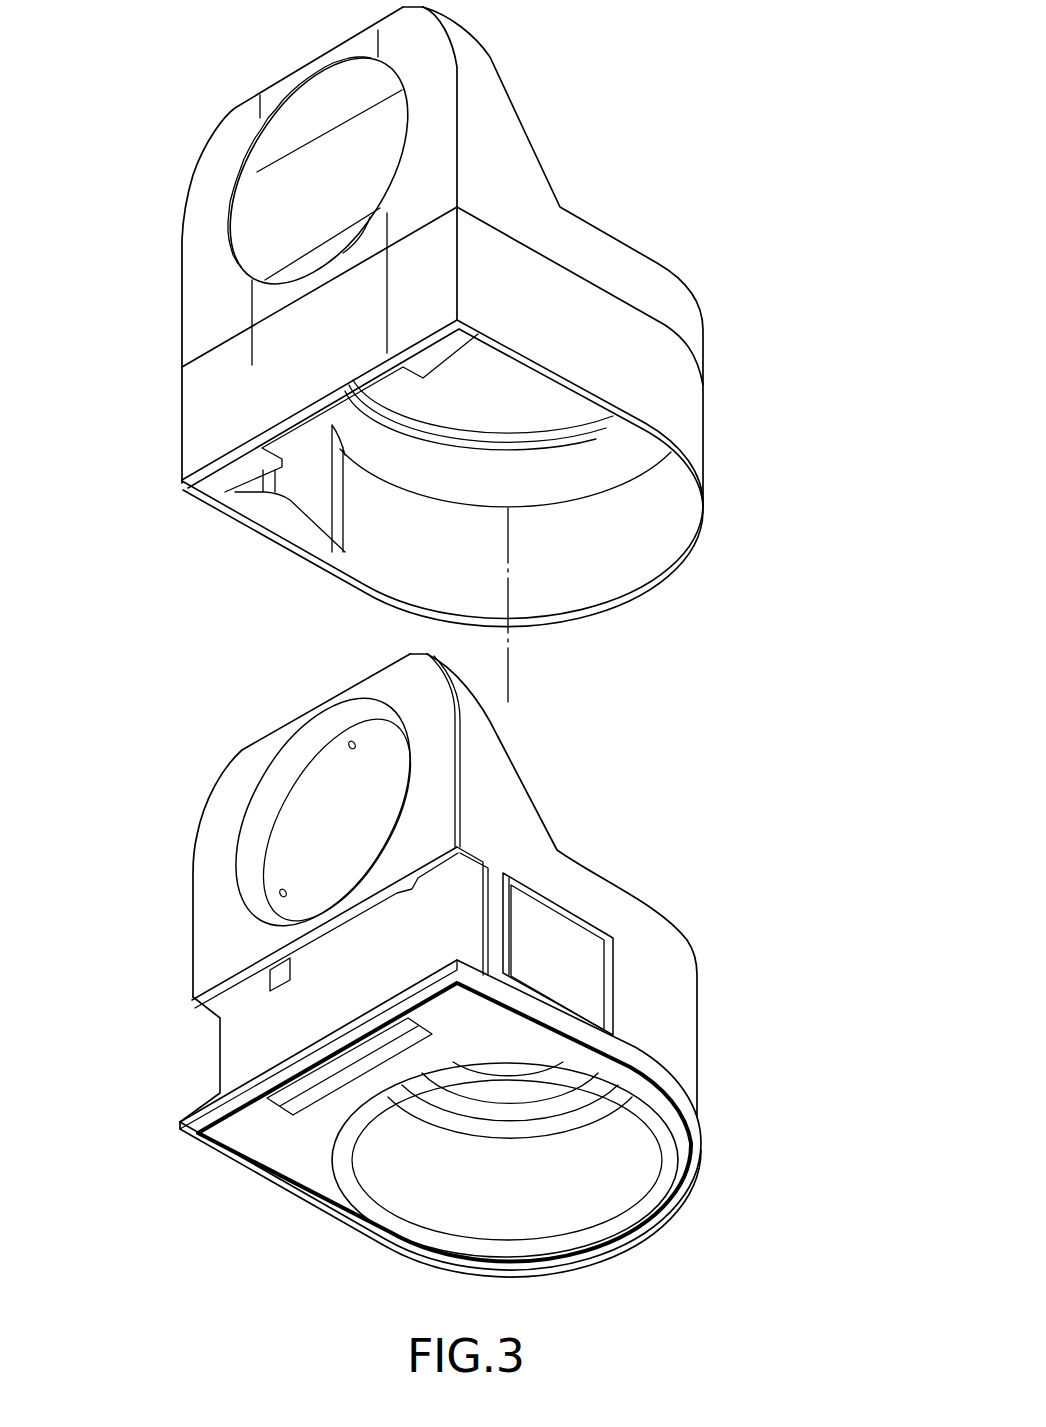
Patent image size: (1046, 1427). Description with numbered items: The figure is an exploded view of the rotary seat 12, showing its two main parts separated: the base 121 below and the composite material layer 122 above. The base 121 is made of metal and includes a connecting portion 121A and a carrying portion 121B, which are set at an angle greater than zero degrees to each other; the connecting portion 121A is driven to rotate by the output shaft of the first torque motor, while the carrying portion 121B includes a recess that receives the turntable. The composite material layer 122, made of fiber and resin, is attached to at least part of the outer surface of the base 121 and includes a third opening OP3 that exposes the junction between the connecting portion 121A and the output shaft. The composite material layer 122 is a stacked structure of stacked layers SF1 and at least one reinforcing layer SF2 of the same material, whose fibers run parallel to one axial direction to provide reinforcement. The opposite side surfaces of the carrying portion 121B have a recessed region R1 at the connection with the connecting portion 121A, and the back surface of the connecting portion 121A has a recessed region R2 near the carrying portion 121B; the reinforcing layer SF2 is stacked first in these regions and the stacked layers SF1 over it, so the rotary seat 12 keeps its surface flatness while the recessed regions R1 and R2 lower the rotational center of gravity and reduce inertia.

The rotary seat 12 is at (838, 45).
The composite material layer 122 is at (636, 219).
The base 121 is at (637, 875).
The connecting portion 121A is at (207, 840).
The carrying portion 121B is at (681, 1070).
The third opening OP3 is at (273, 202).
The stacked layer SF1 is at (623, 573).
The reinforcing layer SF2 is at (543, 380).
The recessed region R1 is at (554, 974).
The recessed region R2 is at (207, 1060).